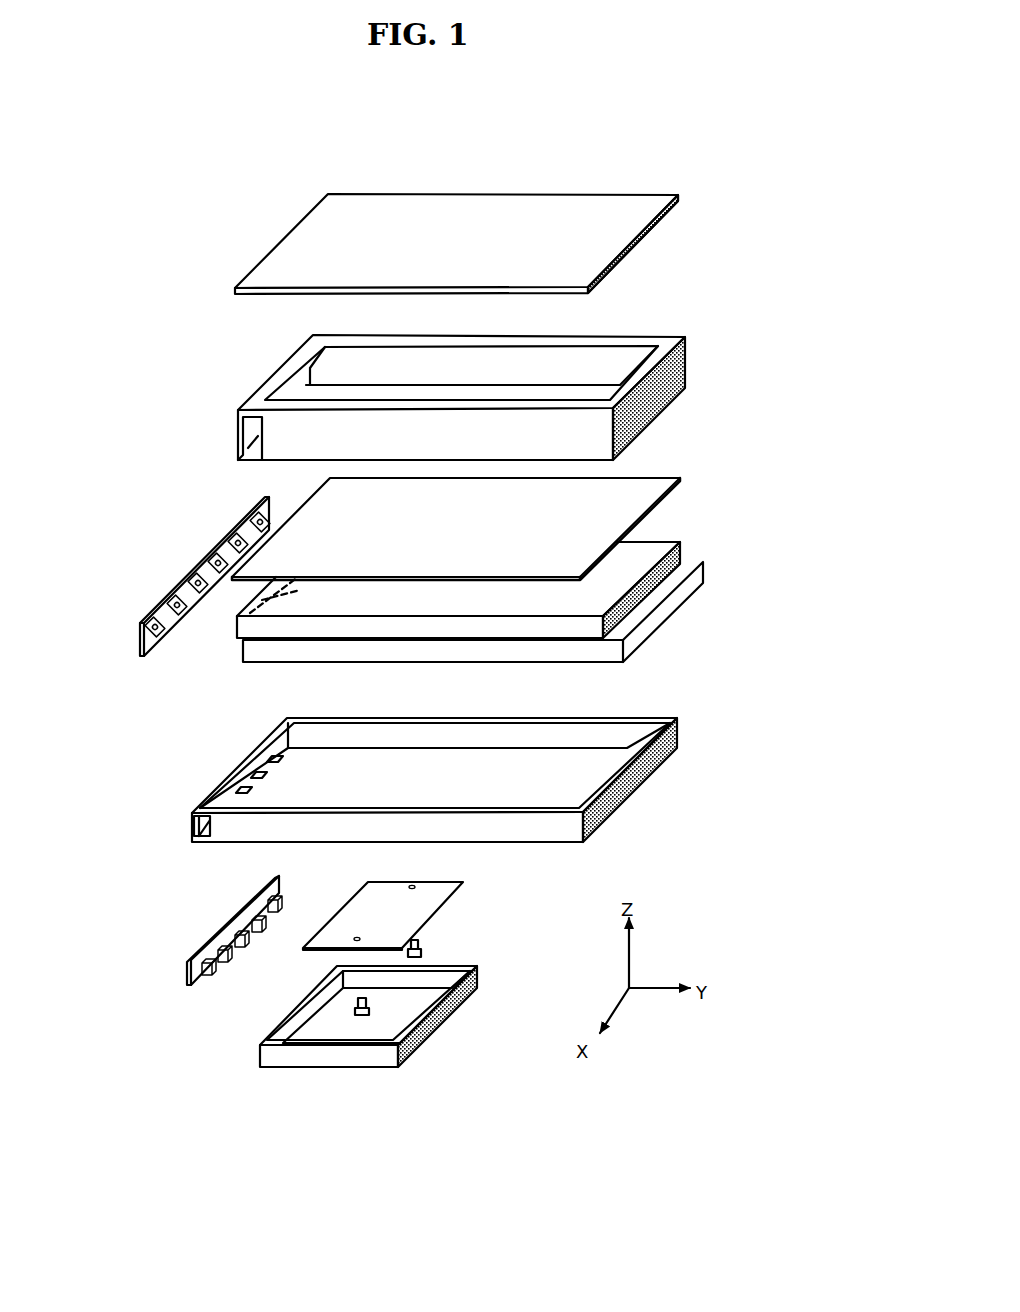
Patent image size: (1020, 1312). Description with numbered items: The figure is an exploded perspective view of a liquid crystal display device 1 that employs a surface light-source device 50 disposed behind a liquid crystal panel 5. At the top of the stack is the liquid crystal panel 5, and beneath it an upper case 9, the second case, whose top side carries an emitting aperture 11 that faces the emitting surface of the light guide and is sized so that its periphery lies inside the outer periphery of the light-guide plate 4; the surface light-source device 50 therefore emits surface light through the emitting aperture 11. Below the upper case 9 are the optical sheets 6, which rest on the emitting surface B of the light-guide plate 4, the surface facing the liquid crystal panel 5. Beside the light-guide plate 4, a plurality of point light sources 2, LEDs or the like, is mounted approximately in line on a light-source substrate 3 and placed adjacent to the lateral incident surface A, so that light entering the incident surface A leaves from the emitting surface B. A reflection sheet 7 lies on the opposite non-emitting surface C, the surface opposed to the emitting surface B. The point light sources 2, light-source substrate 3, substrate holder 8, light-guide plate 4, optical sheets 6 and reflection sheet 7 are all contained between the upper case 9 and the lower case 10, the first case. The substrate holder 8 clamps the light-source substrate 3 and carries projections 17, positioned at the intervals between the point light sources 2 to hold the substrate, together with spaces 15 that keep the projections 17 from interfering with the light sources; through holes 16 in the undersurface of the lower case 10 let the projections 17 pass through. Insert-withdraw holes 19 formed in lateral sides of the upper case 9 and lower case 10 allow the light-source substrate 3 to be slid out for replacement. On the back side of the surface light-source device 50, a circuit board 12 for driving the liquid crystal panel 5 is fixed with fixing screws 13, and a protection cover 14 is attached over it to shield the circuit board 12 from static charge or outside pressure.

The liquid crystal display device 1 is at (205, 157).
The liquid crystal panel 5 is at (652, 200).
The emitting aperture 11 is at (530, 367).
The upper case 9 is at (536, 332).
The insert-withdraw holes 19 is at (250, 445).
The optical sheets 6 is at (667, 483).
The light-guide plate 4 is at (444, 593).
The incident surface A is at (243, 613).
The emitting surface B is at (640, 618).
The opposite non-emitting surface C is at (540, 627).
The light-source substrate 3 is at (166, 576).
The point light sources 2 is at (150, 620).
The reflection sheet 7 is at (433, 681).
The lower case 10 is at (426, 772).
The through holes 16 is at (247, 765).
The circuit board 12 is at (443, 890).
The fixing screws 13 is at (422, 945).
The protection cover 14 is at (477, 970).
The substrate holder 8 is at (199, 1003).
The projections 17 is at (239, 1008).
The spaces 15 is at (227, 970).
The surface light-source device 50 is at (853, 197).